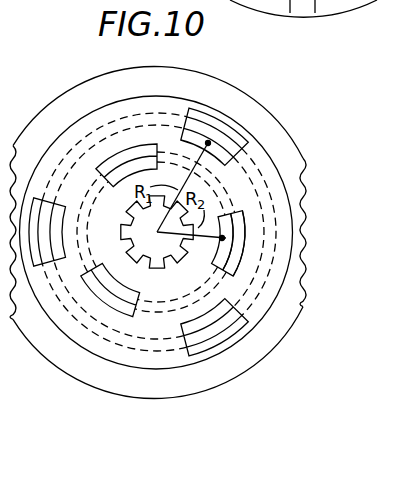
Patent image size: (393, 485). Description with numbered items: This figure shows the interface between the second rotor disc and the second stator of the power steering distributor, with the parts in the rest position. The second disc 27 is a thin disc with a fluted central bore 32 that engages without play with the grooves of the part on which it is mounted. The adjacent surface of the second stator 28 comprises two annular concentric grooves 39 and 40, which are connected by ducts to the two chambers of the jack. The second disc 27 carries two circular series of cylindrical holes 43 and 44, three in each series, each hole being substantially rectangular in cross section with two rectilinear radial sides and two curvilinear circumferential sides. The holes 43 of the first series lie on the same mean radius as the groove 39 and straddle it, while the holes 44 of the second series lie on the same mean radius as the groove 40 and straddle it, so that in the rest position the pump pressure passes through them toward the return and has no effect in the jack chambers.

The second disc 27 is at (55, 129).
The second stator 28 is at (85, 79).
The fluted central bore 32 is at (125, 226).
The annular concentric groove 39 is at (208, 143).
The annular concentric groove 40 is at (232, 252).
The cylindrical holes 43 is at (234, 131).
The cylindrical holes 44 is at (136, 146).